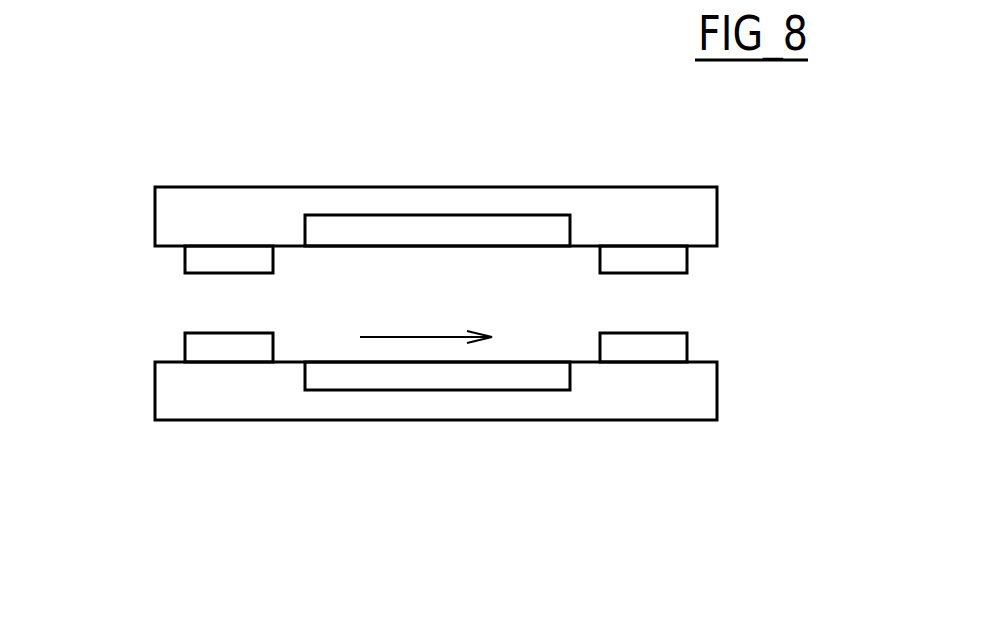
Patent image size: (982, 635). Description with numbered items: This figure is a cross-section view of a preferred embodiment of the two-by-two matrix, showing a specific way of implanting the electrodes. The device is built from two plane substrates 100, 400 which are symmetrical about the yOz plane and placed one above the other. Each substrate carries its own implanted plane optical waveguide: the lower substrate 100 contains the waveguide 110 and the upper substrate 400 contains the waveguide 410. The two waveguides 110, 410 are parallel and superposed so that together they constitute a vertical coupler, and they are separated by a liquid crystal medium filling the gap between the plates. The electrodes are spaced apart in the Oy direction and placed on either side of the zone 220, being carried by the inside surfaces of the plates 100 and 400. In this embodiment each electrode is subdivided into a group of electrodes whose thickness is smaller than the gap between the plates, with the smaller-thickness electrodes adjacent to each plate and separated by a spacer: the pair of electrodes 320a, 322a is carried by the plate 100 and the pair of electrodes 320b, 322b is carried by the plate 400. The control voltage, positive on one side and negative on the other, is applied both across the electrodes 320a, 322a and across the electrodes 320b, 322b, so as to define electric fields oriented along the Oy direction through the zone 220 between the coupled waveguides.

The plane substrate 400 is at (688, 220).
The implanted plane optical waveguide 410 is at (477, 230).
The electrode 320b is at (207, 260).
The electrode 322b is at (672, 259).
The plane substrate 100 is at (685, 400).
The implanted plane optical waveguide 110 is at (460, 377).
The electrode 320a is at (207, 347).
The electrode 322a is at (668, 349).
The zone 220 is at (482, 295).